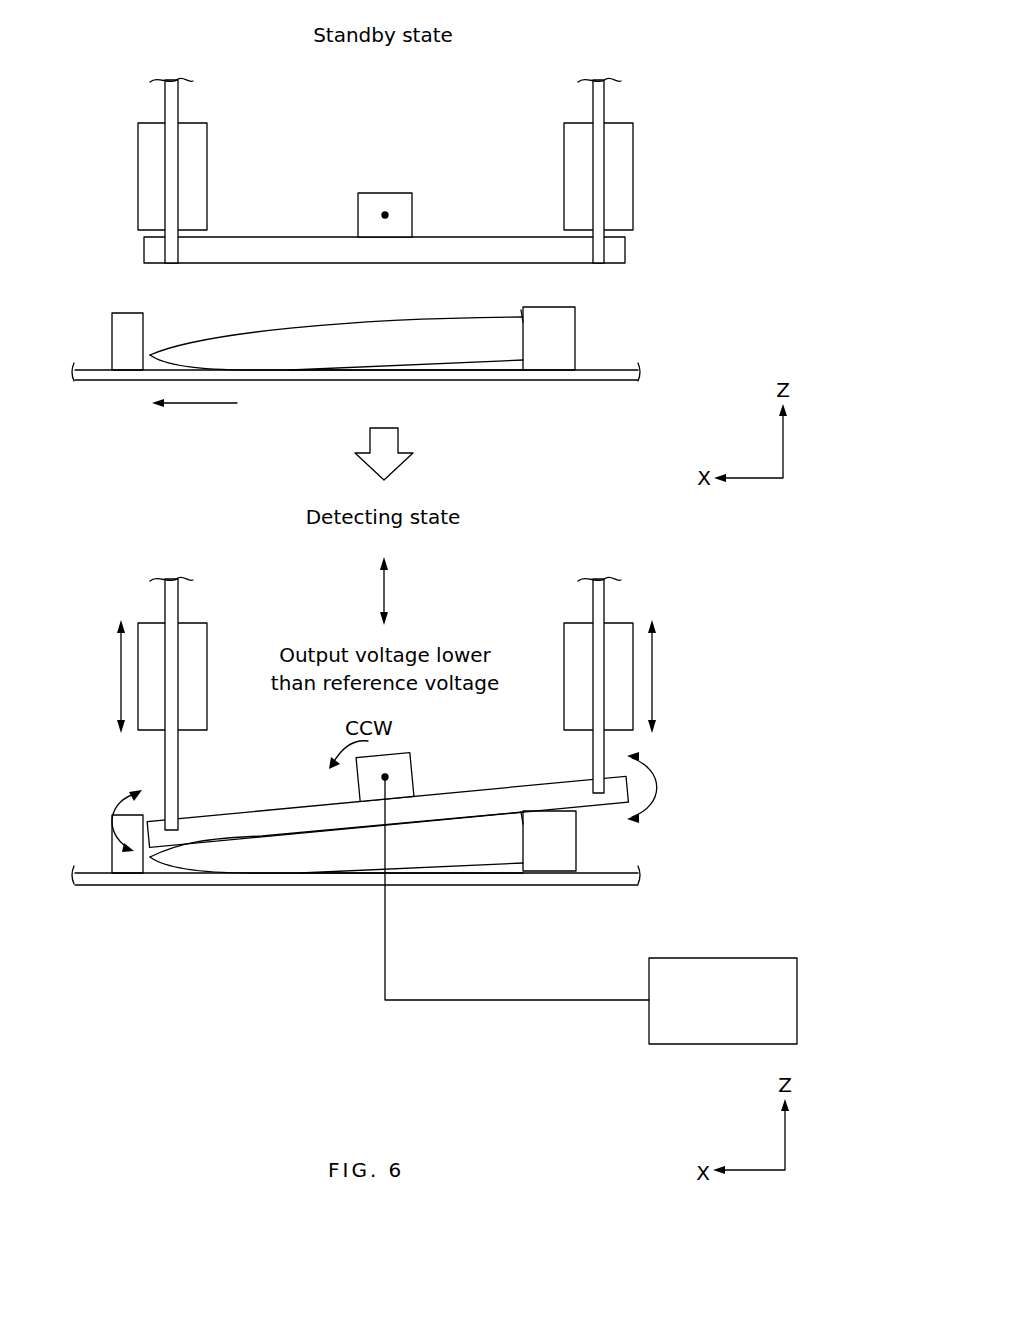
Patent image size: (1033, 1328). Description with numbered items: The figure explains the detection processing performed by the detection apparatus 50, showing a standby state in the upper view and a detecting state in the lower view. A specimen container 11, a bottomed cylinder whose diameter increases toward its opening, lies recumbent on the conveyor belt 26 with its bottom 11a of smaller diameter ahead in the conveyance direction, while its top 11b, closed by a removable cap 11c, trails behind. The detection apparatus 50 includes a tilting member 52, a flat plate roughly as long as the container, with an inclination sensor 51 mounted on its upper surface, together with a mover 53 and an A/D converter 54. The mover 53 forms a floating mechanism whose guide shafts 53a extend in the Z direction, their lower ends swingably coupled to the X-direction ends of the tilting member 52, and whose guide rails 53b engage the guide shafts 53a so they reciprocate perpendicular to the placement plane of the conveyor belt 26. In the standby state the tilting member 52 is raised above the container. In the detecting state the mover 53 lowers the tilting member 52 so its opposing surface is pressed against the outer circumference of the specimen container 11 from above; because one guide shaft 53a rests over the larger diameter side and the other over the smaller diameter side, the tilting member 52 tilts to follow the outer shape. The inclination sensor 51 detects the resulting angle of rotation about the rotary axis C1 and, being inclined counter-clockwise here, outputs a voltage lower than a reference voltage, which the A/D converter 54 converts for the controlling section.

The detection apparatus 50 is at (539, 69).
The inclination sensor 51 is at (398, 193).
The tilting member 52 is at (505, 237).
The mover 53 is at (390, 454).
The guide shaft 53a is at (180, 97).
The guide rail 53b is at (208, 168).
The rotary axis C1 is at (389, 215).
The specimen container 11 is at (398, 318).
The bottom 11a is at (150, 350).
The top 11b is at (523, 310).
The cap 11c is at (577, 333).
The conveyor belt 26 is at (642, 375).
The A/D converter 54 is at (742, 958).